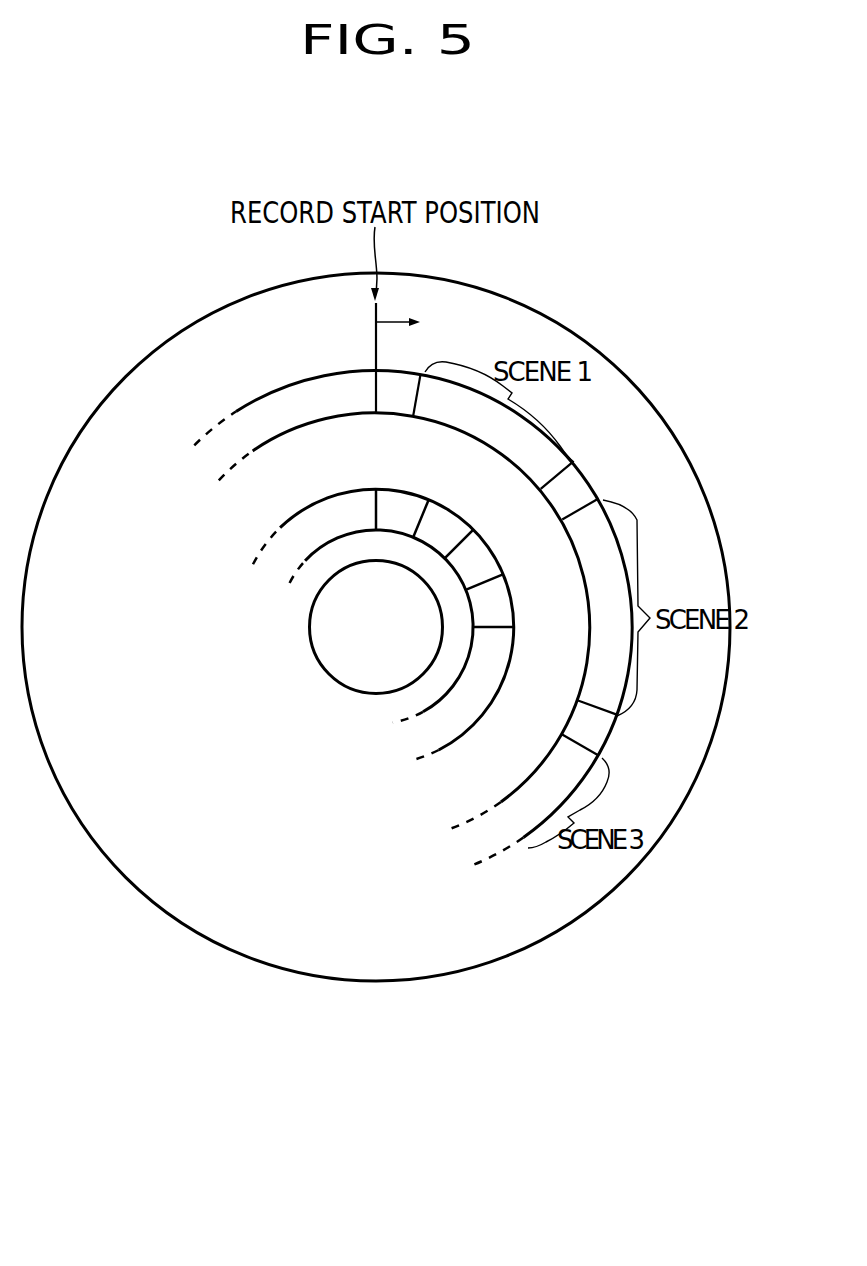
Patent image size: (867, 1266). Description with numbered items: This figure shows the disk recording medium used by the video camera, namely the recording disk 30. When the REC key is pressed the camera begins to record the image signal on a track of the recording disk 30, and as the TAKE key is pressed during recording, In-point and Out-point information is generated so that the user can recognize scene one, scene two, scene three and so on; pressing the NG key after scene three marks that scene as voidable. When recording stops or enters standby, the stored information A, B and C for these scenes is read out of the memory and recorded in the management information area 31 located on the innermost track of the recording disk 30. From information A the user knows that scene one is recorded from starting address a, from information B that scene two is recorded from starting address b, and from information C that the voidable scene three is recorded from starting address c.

The recording disk 30 is at (310, 981).
The management information area 31 is at (398, 743).
The starting address of scene 1 a is at (421, 374).
The starting address of scene 2 b is at (599, 498).
The starting address of scene 3 c is at (599, 756).